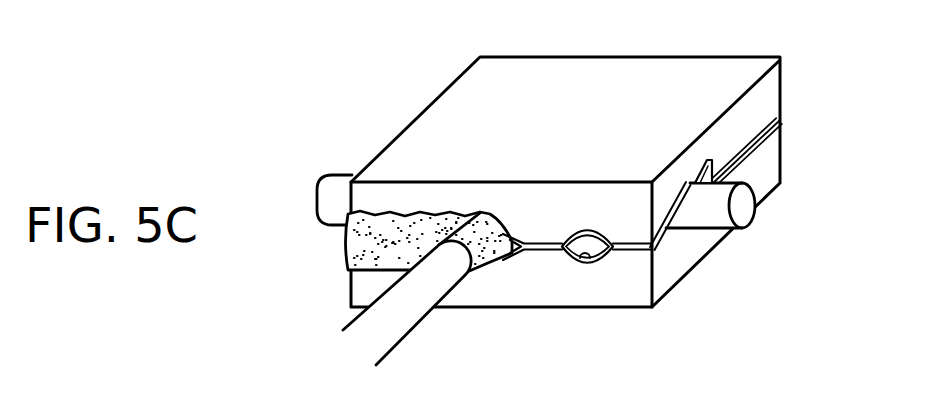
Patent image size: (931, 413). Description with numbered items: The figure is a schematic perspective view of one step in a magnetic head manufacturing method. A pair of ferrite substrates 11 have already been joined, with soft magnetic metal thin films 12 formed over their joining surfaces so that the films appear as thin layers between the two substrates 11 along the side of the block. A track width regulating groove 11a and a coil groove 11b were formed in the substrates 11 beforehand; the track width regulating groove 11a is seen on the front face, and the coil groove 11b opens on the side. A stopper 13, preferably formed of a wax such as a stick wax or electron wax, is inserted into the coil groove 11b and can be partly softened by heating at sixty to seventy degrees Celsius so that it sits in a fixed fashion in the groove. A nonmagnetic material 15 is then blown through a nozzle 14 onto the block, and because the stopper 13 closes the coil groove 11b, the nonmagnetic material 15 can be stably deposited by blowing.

The ferrite substrate 11 is at (770, 107).
The track width regulating groove 11a is at (593, 262).
The coil groove 11b is at (688, 182).
The soft magnetic metal thin film 12 is at (779, 114).
The stopper 13 is at (722, 217).
The nozzle 14 is at (395, 335).
The nonmagnetic material 15 is at (350, 246).